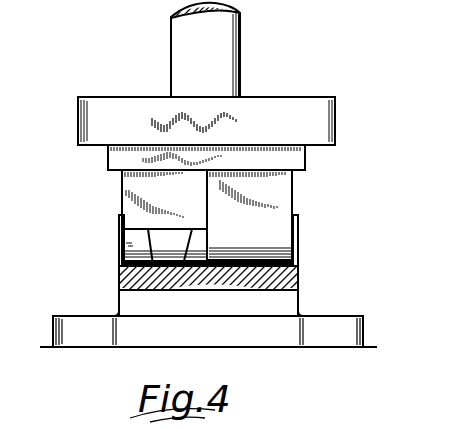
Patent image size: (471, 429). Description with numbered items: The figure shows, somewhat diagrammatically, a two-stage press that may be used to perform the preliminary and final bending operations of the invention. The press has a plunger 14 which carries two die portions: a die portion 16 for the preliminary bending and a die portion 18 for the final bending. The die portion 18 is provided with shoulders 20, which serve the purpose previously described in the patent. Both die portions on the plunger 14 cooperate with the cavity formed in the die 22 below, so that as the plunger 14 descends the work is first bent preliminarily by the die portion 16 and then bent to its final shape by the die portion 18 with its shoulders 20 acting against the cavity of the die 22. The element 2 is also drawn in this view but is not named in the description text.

The inner cup 2 is at (132, 243).
The plunger 14 is at (118, 161).
The die portion for preliminary bending 16 is at (299, 267).
The die portion for final bending 18 is at (124, 263).
The shoulders 20 is at (122, 229).
The die 22 is at (163, 303).